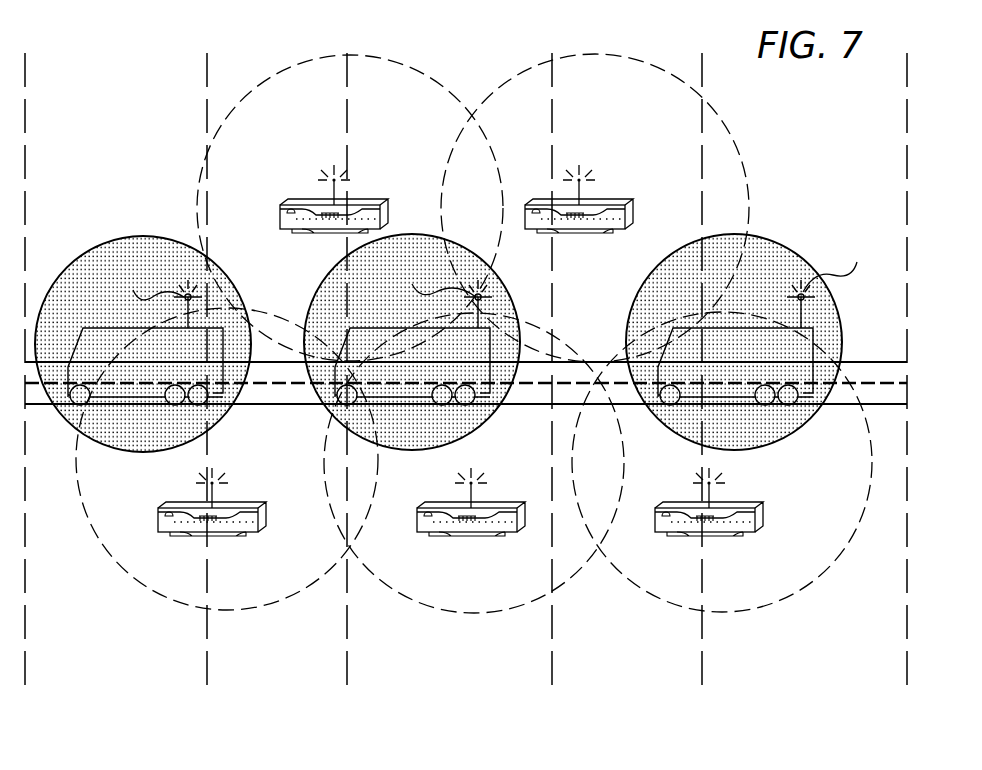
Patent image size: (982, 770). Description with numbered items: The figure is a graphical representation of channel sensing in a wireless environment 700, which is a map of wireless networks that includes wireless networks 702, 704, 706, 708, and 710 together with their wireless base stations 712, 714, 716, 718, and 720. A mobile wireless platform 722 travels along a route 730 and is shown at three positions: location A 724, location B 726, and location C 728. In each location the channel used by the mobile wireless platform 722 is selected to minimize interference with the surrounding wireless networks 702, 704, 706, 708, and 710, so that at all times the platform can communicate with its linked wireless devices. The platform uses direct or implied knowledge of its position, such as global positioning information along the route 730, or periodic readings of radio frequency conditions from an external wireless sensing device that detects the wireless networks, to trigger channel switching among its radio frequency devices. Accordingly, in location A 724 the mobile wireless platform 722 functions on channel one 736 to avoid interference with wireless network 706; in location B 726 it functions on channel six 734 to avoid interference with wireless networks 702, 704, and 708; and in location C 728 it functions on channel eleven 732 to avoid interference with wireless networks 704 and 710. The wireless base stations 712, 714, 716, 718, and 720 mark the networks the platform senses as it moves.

The wireless environment 700 is at (122, 55).
The wireless network 702 is at (322, 123).
The wireless network 704 is at (612, 113).
The wireless network 706 is at (268, 574).
The wireless network 708 is at (495, 575).
The wireless network 710 is at (763, 575).
The wireless base station 712 is at (372, 203).
The wireless base station 714 is at (620, 203).
The wireless base station 716 is at (255, 506).
The wireless base station 718 is at (508, 506).
The wireless base station 720 is at (763, 516).
The mobile wireless platform 722 is at (757, 367).
The location A 724 is at (142, 677).
The location B 726 is at (473, 677).
The location C 728 is at (828, 677).
The route 730 is at (866, 361).
The channel 11 732 is at (786, 249).
The channel 6 734 is at (318, 296).
The channel 1 736 is at (104, 245).